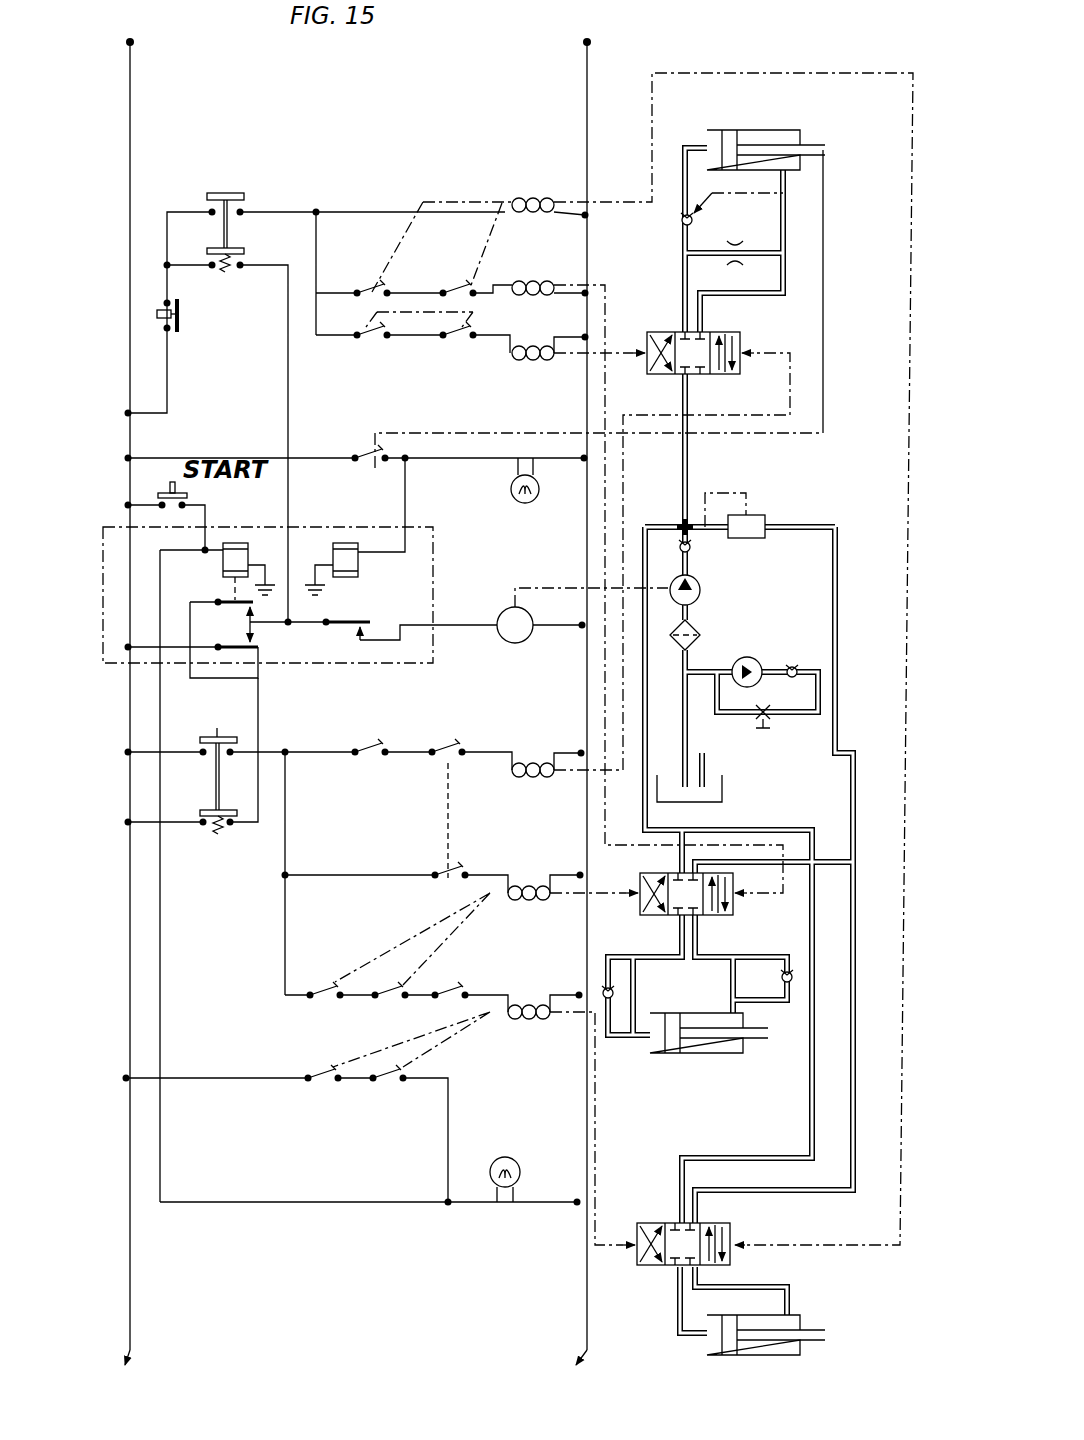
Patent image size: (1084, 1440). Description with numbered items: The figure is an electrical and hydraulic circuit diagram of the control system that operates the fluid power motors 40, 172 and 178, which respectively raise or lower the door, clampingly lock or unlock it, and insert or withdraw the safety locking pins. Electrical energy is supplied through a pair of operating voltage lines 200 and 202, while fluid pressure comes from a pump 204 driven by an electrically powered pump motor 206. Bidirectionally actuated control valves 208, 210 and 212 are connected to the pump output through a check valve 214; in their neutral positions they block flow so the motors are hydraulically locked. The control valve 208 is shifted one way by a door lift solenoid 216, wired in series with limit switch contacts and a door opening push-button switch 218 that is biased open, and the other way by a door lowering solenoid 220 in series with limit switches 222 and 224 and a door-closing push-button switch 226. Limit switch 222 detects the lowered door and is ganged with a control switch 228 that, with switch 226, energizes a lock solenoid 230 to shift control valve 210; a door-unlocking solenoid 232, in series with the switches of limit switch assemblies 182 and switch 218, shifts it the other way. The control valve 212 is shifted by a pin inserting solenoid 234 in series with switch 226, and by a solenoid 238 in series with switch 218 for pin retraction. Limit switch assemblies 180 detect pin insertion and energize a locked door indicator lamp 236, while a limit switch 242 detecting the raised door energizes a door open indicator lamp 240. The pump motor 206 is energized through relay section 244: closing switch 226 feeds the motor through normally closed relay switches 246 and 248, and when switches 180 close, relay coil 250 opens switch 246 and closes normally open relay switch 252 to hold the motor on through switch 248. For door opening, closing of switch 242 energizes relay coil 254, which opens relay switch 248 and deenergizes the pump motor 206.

The operating voltage line 200 is at (130, 125).
The operating voltage line 202 is at (587, 125).
The door opening push-button switch 218 is at (262, 198).
The pin retracting solenoid 238 is at (553, 198).
The limit switch assemblies 182 is at (450, 287).
The door-unlocking solenoid 232 is at (555, 282).
The door lift solenoid 216 is at (542, 338).
The control valve 208 is at (745, 348).
The fluid power motor 40 is at (810, 138).
The limit switch 242 is at (355, 466).
The door open indicator lamp 240 is at (511, 490).
The relay coil 250 is at (235, 540).
The relay coil 254 is at (358, 562).
The relay switch 246 is at (220, 598).
The relay switch 248 is at (355, 620).
The relay switch 252 is at (250, 650).
The door-closing push-button switch 226 is at (203, 762).
The relay section 244 is at (100, 640).
The pump 204 is at (697, 595).
The check valve 214 is at (690, 548).
The pump motor 206 is at (515, 643).
The door lowering solenoid 220 is at (520, 762).
The limit switch 224 is at (357, 760).
The limit switch 222 is at (448, 760).
The lock solenoid 230 is at (525, 885).
The control switch 228 is at (448, 880).
The control valve 210 is at (735, 895).
The pin inserting solenoid 234 is at (525, 1000).
The limit switch assemblies 180 is at (325, 1072).
The fluid power motor 172 is at (765, 1052).
The locked door indicator lamp 236 is at (497, 1180).
The control valve 212 is at (740, 1238).
The fluid power motor 178 is at (812, 1322).